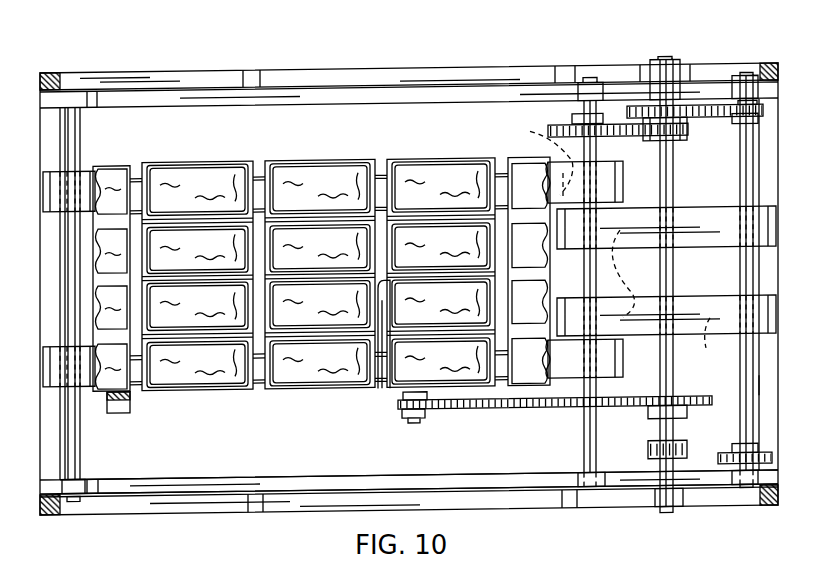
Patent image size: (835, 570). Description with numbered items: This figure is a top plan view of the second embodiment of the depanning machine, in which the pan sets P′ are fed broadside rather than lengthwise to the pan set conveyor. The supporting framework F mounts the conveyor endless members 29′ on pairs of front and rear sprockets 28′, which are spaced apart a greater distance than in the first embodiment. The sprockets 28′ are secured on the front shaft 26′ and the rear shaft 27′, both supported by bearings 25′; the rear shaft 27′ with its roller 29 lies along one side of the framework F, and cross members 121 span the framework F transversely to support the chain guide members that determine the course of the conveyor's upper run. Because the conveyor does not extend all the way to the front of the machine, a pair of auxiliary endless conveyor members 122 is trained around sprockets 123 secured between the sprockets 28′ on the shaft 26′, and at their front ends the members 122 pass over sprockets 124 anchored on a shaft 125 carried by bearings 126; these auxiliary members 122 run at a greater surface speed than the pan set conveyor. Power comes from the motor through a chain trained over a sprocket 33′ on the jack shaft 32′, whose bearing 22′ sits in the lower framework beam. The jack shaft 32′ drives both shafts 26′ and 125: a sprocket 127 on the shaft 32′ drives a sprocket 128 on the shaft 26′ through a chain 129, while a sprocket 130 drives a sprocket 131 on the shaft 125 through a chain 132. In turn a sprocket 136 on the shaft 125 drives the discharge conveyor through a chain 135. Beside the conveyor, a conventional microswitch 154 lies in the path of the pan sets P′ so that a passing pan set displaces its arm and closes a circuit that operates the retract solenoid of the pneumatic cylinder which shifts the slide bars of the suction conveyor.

The supporting framework F is at (58, 60).
The bearings 25′ is at (93, 495).
The rear shaft 27′ is at (79, 451).
The endless members 29′ is at (91, 169).
The lower left roller 29 is at (89, 383).
The microswitch 154 is at (131, 401).
The cross members 121 is at (143, 475).
The pan sets P′ is at (275, 392).
The sprockets 28′ is at (539, 161).
The sprocket 128 is at (553, 125).
The chain 129 is at (596, 108).
The sprocket 130 is at (638, 118).
The chain 132 is at (712, 109).
The sprocket 131 is at (727, 106).
The sprocket 127 is at (685, 146).
The auxiliary endless conveyor members 122 is at (682, 214).
The sprockets 123 is at (629, 273).
The sprockets 124 is at (693, 343).
The sprocket 33′ is at (749, 387).
The shaft 125 is at (697, 380).
The front shaft 26′ is at (588, 433).
The chain 135 is at (720, 458).
The bearing 22′ is at (600, 474).
The jack shaft 32′ is at (663, 516).
The sprocket 136 is at (726, 491).
The bearings 126 is at (756, 490).